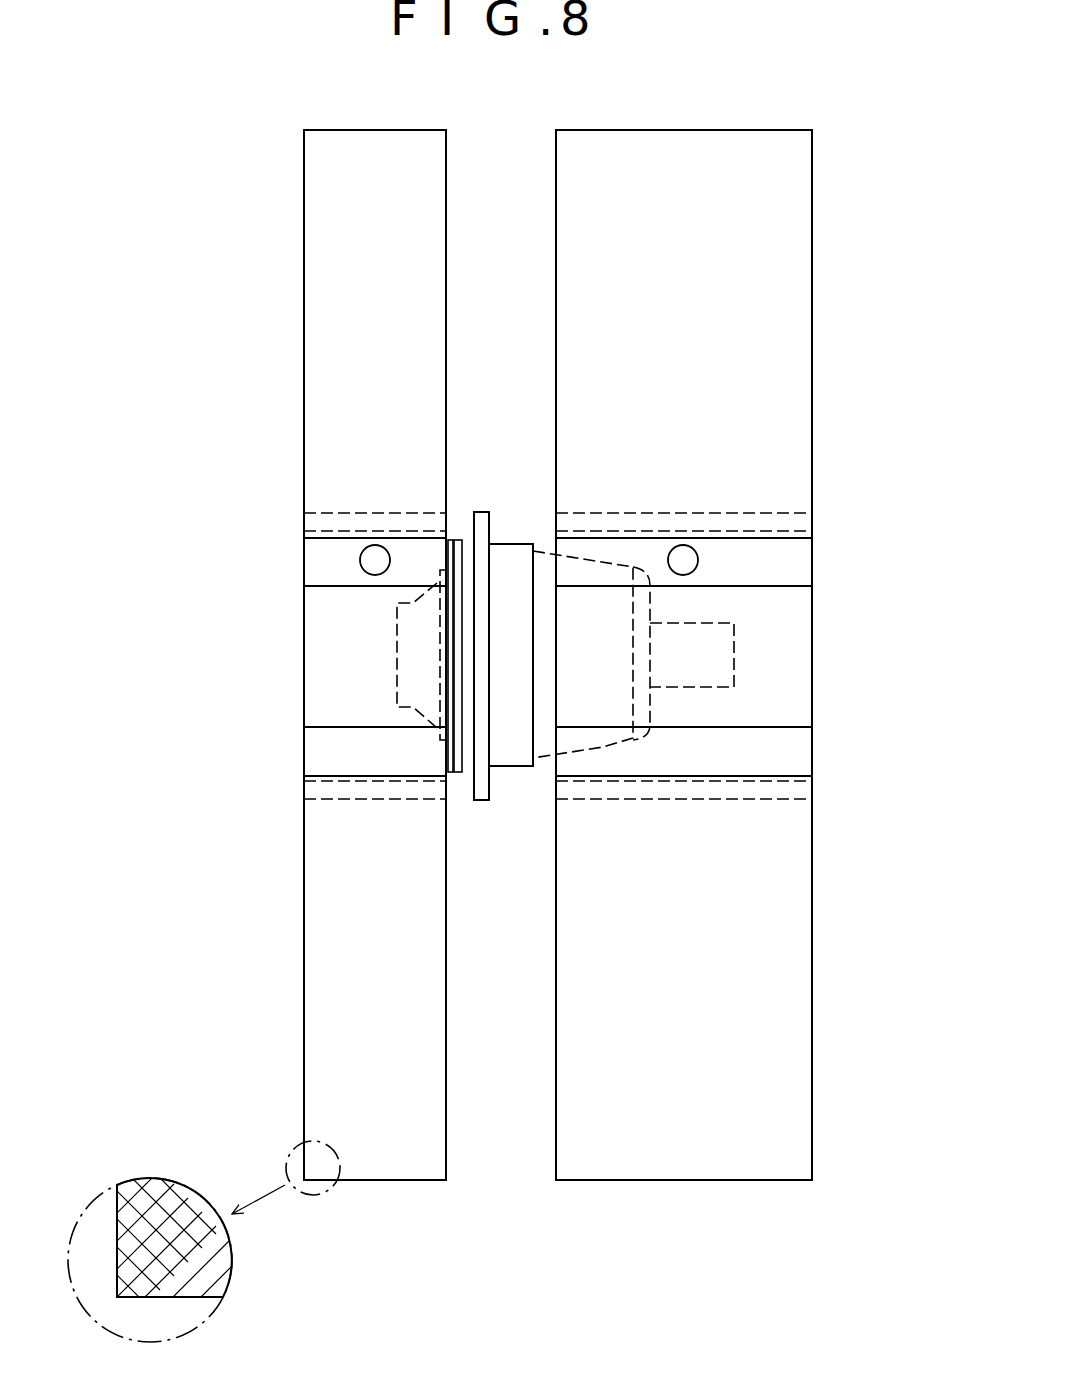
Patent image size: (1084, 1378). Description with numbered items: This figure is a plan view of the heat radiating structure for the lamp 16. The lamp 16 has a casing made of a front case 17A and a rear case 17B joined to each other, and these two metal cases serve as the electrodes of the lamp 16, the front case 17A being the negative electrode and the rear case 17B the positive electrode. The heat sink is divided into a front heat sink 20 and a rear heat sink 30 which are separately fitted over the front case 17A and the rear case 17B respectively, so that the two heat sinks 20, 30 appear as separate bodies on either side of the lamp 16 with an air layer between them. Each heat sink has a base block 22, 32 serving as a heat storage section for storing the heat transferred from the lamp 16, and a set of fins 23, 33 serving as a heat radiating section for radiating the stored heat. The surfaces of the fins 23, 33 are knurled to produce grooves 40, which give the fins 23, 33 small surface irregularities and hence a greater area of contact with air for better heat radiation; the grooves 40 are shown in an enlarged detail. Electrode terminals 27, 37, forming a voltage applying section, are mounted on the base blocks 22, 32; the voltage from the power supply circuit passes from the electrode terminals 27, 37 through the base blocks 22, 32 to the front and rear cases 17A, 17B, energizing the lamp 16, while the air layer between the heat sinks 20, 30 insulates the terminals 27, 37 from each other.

The lamp 16 is at (507, 543).
The front case 17A is at (418, 712).
The rear case 17B is at (603, 747).
The front heat sink 20 is at (253, 682).
The base block 22 is at (327, 665).
The fins 23 is at (322, 342).
The electrode terminal 27 is at (372, 560).
The rear heat sink 30 is at (730, 655).
The base block 32 is at (777, 655).
The fins 33 is at (770, 326).
The electrode terminal 37 is at (685, 560).
The grooves 40 is at (190, 1251).